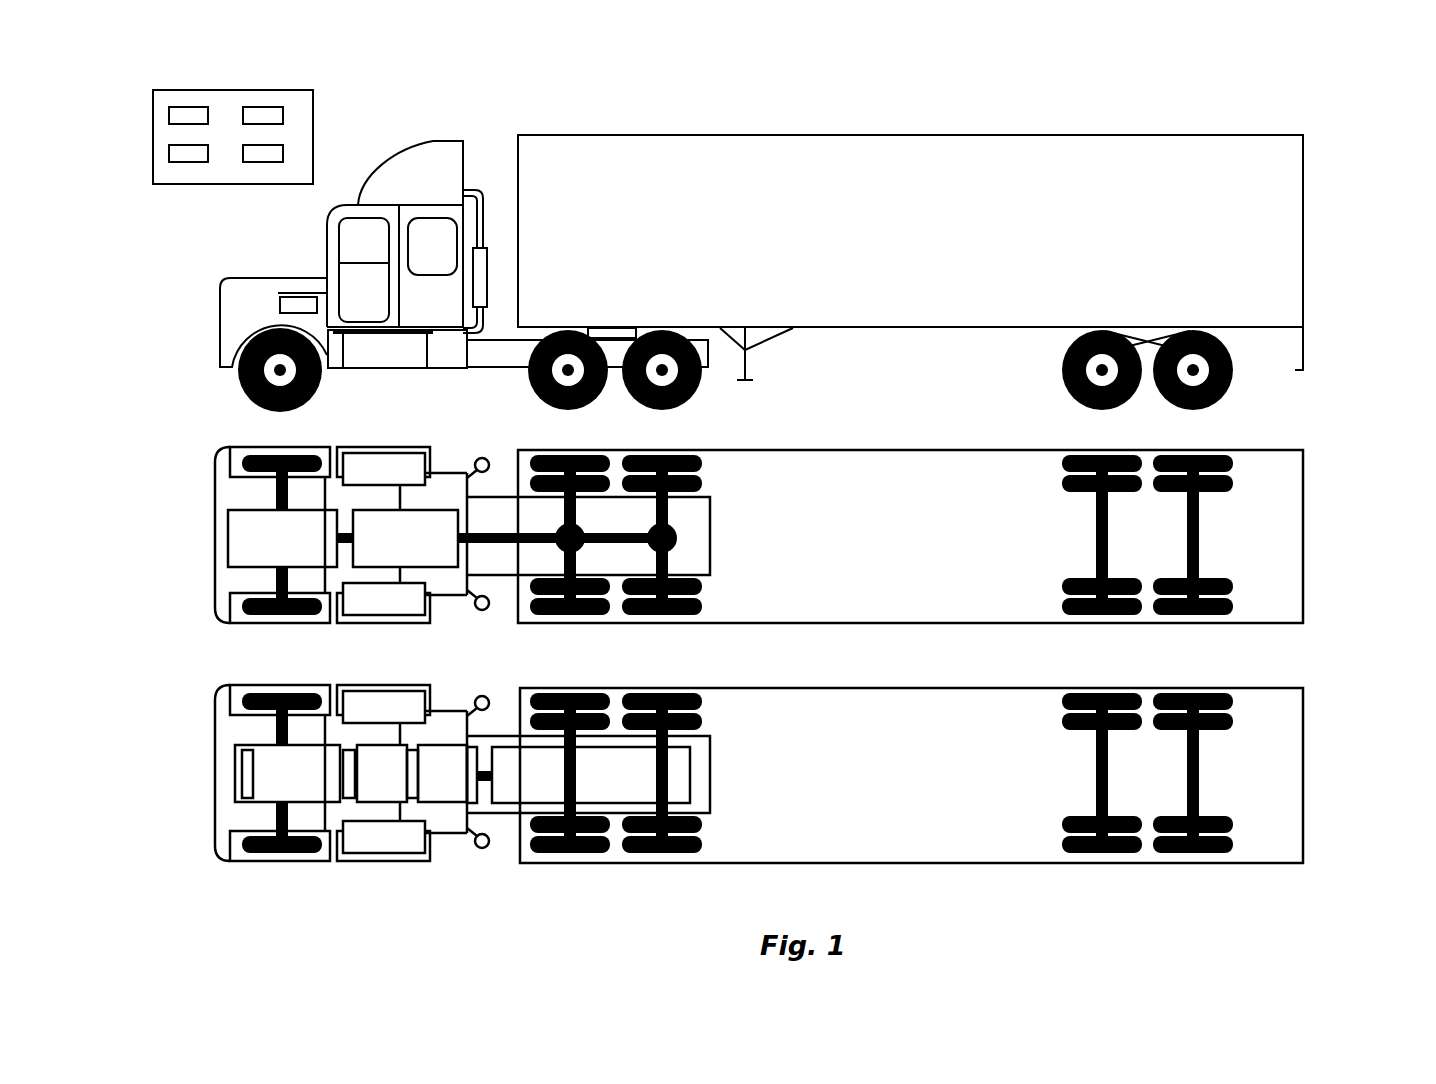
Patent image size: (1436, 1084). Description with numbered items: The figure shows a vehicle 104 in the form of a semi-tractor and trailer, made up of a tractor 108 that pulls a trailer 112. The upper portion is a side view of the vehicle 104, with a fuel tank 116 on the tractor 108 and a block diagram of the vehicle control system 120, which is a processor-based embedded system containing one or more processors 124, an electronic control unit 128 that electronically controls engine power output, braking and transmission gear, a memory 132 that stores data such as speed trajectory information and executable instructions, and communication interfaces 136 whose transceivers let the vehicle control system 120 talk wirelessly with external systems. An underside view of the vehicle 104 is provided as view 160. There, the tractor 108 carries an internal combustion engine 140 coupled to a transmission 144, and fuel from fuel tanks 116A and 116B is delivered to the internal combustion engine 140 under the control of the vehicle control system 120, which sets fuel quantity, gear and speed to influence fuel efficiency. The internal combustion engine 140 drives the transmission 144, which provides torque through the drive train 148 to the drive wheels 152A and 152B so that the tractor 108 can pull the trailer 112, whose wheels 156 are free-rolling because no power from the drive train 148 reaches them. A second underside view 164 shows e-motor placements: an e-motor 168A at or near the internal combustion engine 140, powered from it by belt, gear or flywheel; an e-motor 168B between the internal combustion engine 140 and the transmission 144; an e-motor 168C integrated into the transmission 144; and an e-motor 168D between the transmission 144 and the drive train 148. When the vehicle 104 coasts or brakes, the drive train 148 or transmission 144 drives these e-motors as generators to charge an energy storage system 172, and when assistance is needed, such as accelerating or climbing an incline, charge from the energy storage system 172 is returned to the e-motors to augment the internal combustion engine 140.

The vehicle 104 is at (752, 226).
The tractor 108 is at (398, 226).
The trailer 112 is at (835, 135).
The fuel tank 116 is at (383, 350).
The fuel tank 116A is at (383, 466).
The fuel tank 116B is at (383, 603).
The vehicle control system 120 is at (280, 300).
The processors 124 is at (169, 112).
The electronic control unit 128 is at (169, 150).
The memory 132 is at (283, 115).
The communication interfaces 136 is at (283, 153).
The internal combustion engine 140 is at (282, 538).
The transmission 144 is at (405, 538).
The drive train 148 is at (677, 530).
The drive wheel 152A is at (583, 613).
The drive wheel 152B is at (687, 613).
The wheels 156 is at (1233, 462).
The underside view 160 is at (825, 534).
The electric drivetrain configuration 164 is at (824, 779).
The e-motor 168A is at (307, 852).
The e-motor 168B is at (352, 803).
The e-motor 168C is at (417, 803).
The e-motor 168D is at (475, 800).
The energy storage system 172 is at (693, 803).